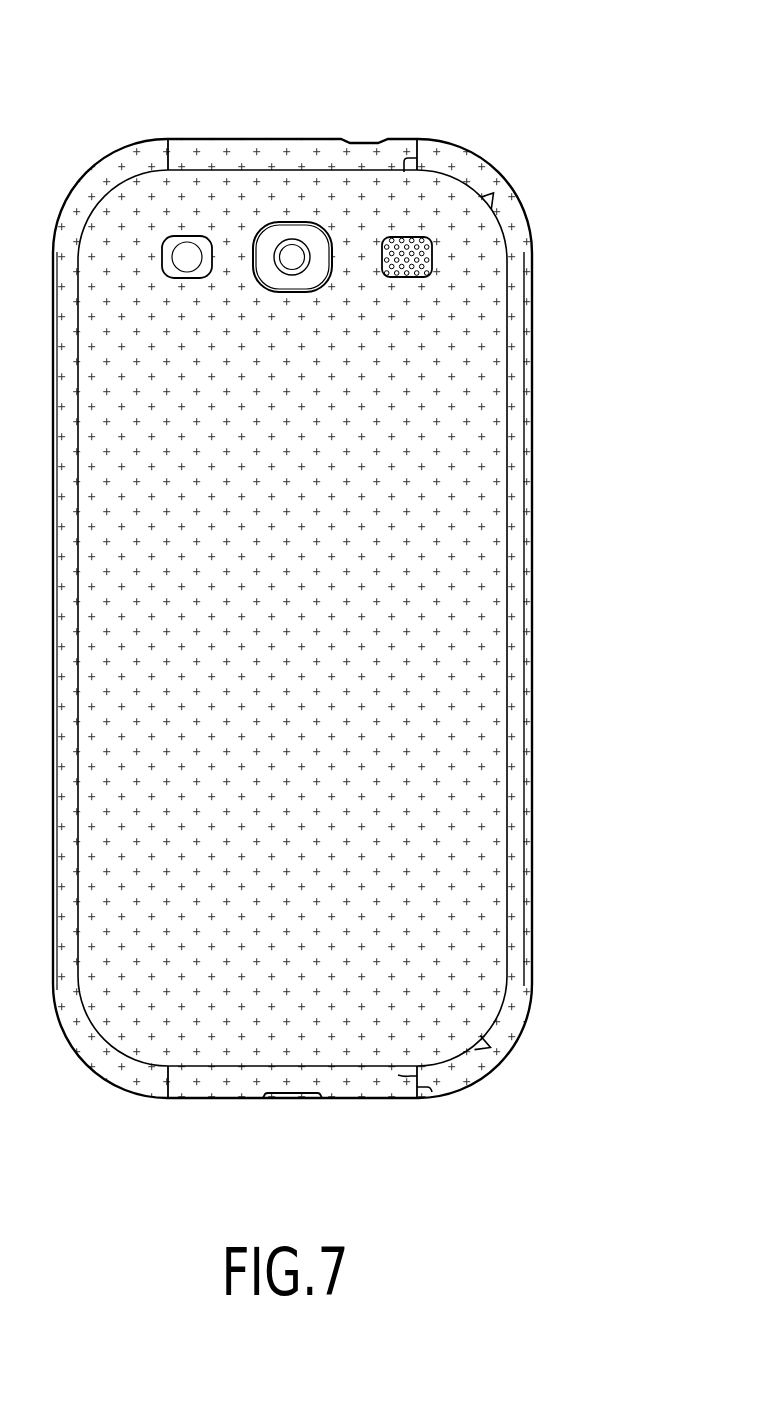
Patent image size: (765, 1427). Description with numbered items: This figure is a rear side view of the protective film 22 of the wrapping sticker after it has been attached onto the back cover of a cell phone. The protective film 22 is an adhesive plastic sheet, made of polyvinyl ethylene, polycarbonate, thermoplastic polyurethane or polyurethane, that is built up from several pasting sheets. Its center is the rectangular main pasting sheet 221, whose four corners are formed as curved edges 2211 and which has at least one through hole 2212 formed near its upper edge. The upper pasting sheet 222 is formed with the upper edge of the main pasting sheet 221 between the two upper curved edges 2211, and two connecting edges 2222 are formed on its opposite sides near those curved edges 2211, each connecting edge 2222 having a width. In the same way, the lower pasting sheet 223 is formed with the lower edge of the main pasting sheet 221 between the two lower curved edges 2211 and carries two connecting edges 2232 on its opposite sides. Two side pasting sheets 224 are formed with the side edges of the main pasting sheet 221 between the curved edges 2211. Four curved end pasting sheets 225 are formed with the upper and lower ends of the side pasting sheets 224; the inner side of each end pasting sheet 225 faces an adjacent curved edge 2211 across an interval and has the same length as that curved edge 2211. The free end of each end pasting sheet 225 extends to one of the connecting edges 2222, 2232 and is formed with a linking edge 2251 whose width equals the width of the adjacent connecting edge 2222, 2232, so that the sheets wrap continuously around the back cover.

The protective film 22 is at (499, 561).
The main pasting sheet 221 is at (280, 597).
The upper pasting sheet 222 is at (228, 152).
The connecting edges 2222 is at (418, 147).
The lower pasting sheet 223 is at (215, 1083).
The connecting edges 2232 is at (432, 1092).
The side pasting sheets 224 is at (515, 722).
The end pasting sheets 225 is at (478, 165).
The linking edge 2251 is at (404, 172).
The curved edges 2211 is at (489, 199).
The through hole 2212 is at (281, 291).